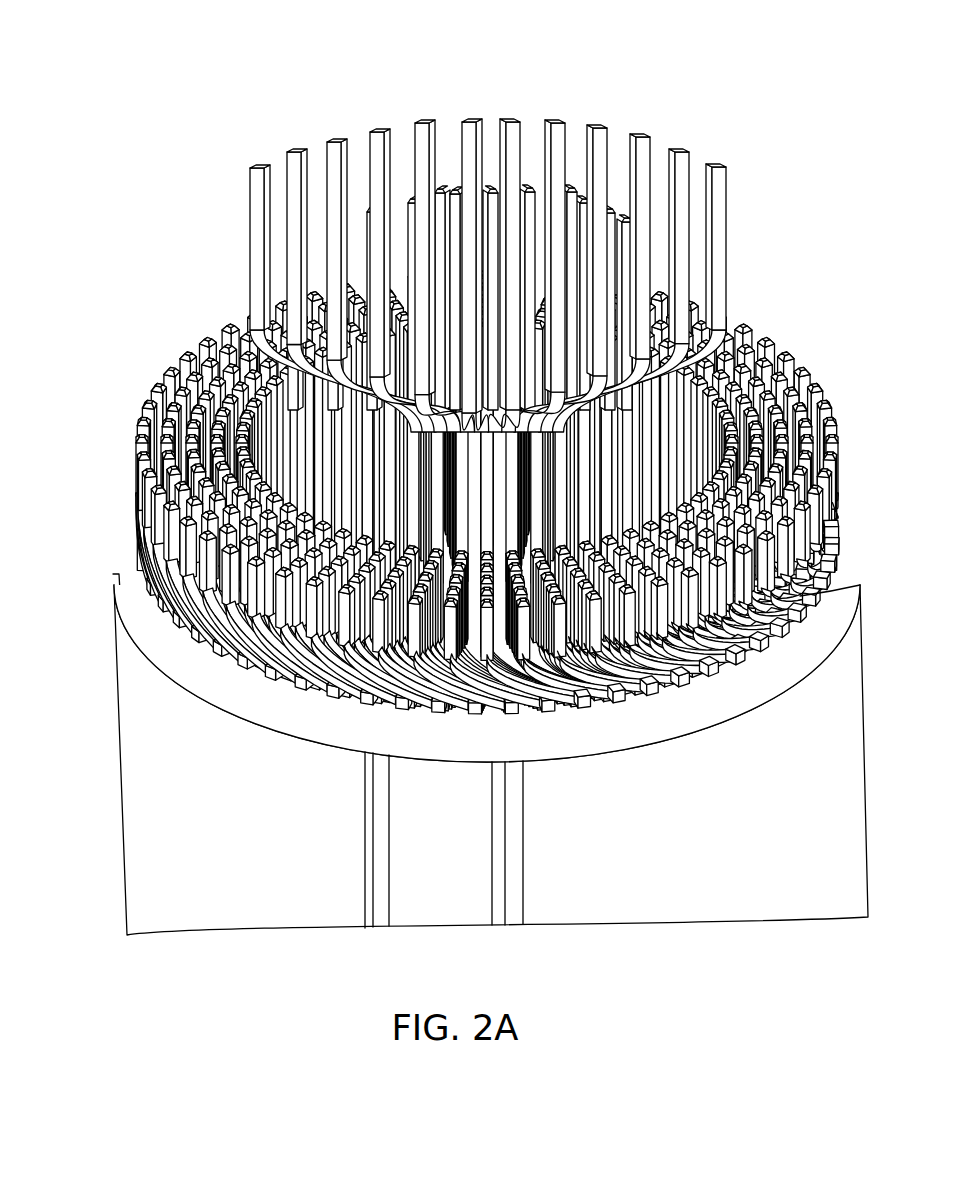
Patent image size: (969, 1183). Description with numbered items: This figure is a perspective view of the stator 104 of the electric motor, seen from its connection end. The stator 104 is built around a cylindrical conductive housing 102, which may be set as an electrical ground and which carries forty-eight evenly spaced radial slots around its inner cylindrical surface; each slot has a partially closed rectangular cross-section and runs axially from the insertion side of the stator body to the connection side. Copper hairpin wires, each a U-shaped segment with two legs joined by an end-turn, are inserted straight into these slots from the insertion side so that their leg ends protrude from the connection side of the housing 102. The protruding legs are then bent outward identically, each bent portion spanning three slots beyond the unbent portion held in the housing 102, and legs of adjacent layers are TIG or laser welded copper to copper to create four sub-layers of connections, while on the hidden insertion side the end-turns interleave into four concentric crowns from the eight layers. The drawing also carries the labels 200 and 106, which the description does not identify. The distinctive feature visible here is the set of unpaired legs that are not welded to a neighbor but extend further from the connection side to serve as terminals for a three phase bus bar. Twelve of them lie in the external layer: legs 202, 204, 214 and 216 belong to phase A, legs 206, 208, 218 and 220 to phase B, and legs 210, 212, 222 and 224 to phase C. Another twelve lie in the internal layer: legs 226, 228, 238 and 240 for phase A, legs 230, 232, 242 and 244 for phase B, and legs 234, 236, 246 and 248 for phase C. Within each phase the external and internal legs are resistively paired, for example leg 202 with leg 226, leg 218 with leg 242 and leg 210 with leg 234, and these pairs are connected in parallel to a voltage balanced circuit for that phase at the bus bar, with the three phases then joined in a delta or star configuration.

The conductive housing 102 is at (192, 677).
The stator 104 is at (88, 632).
The stator core end face 106 is at (830, 557).
The winding assembly 200 is at (163, 131).
The leg 202 is at (304, 250).
The leg 204 is at (326, 241).
The leg 206 is at (350, 234).
The leg 208 is at (373, 226).
The leg 210 is at (418, 217).
The leg 212 is at (466, 219).
The leg 214 is at (521, 219).
The leg 216 is at (568, 219).
The leg 218 is at (615, 219).
The leg 220 is at (638, 230).
The leg 222 is at (661, 242).
The leg 224 is at (682, 254).
The leg 226 is at (218, 318).
The leg 228 is at (238, 311).
The leg 230 is at (257, 307).
The leg 232 is at (278, 293).
The leg 234 is at (385, 207).
The leg 236 is at (433, 207).
The leg 238 is at (498, 208).
The leg 240 is at (557, 208).
The leg 242 is at (619, 208).
The leg 244 is at (702, 300).
The leg 246 is at (714, 308).
The leg 248 is at (723, 312).